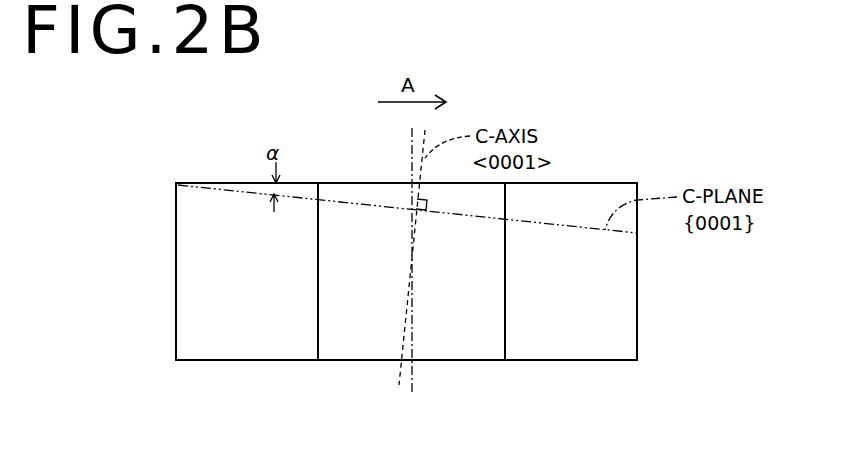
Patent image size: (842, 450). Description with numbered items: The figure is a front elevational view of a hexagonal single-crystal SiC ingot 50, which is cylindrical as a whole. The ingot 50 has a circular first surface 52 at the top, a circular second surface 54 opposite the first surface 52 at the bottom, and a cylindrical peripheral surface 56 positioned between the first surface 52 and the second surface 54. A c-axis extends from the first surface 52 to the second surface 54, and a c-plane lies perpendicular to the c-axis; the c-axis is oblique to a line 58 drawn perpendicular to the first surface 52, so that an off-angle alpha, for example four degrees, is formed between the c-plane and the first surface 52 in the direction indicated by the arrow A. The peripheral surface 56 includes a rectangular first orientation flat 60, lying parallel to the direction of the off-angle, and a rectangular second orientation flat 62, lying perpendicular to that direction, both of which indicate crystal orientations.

The single-crystal SiC ingot 50 is at (168, 201).
The first surface 52 is at (581, 183).
The second surface 54 is at (198, 361).
The peripheral surface 56 is at (185, 258).
The line perpendicular to the first surface 58 is at (411, 141).
The first orientation flat 60 is at (462, 332).
The second orientation flat 62 is at (637, 310).